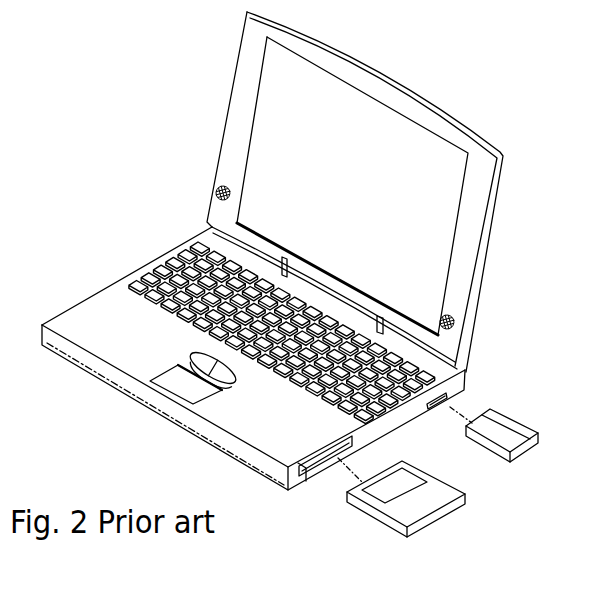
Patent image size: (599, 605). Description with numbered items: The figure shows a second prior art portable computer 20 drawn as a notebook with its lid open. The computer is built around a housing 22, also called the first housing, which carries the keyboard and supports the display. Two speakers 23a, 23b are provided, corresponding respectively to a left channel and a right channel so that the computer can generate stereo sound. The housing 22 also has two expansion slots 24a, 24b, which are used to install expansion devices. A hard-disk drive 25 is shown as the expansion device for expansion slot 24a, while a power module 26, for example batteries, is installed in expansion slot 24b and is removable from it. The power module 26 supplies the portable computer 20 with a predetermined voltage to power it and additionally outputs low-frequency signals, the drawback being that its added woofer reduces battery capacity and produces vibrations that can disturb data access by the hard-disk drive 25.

The portable computer 20 is at (134, 130).
The housing 22 is at (72, 325).
The speaker 23a is at (216, 197).
The speaker 23b is at (454, 329).
The expansion slot 24a is at (304, 486).
The expansion slot 24b is at (447, 393).
The hard-disk drive 25 is at (400, 512).
The power module 26 is at (517, 438).